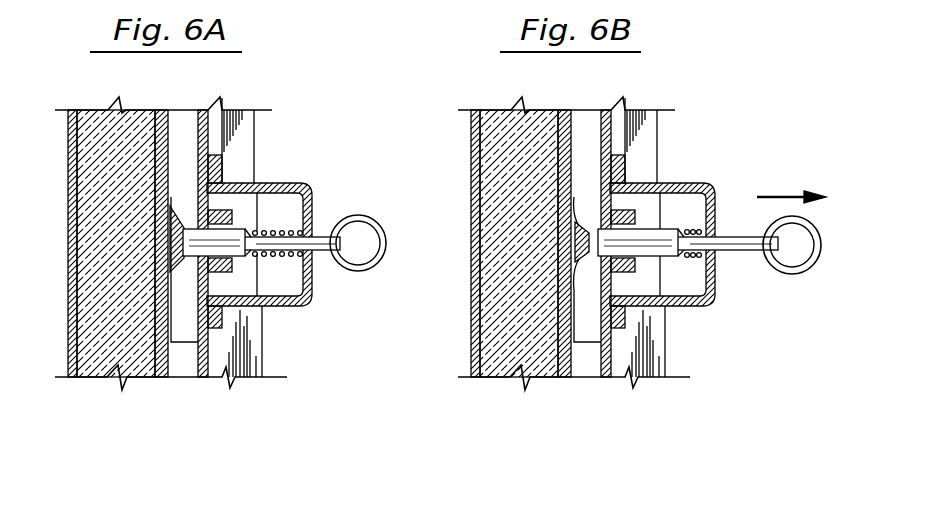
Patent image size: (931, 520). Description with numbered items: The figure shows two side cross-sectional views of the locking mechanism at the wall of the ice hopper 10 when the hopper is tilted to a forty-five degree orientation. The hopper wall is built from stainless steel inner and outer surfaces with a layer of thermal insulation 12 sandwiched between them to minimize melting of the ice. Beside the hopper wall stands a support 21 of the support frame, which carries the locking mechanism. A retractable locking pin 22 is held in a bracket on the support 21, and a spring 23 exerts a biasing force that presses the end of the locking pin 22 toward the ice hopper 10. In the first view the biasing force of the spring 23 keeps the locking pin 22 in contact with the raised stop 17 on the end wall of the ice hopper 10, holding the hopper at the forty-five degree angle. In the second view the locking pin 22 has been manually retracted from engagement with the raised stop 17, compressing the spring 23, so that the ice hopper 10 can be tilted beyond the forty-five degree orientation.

In FIG. 6A, the ice hopper 10 is at (53, 198).
In FIG. 6B, the ice hopper 10 is at (448, 202).
In FIG. 6A, the thermal insulation 12 is at (97, 120).
In FIG. 6B, the thermal insulation 12 is at (498, 147).
In FIG. 6A, the raised stop 17 is at (177, 206).
In FIG. 6B, the raised stop 17 is at (581, 214).
In FIG. 6A, the support 21 is at (243, 147).
In FIG. 6B, the support 21 is at (645, 148).
In FIG. 6A, the locking pin 22 is at (237, 221).
In FIG. 6B, the locking pin 22 is at (647, 228).
In FIG. 6A, the spring 23 is at (289, 304).
In FIG. 6B, the spring 23 is at (700, 300).